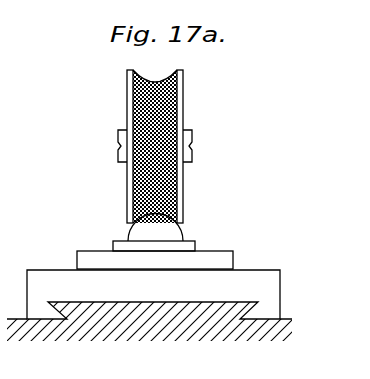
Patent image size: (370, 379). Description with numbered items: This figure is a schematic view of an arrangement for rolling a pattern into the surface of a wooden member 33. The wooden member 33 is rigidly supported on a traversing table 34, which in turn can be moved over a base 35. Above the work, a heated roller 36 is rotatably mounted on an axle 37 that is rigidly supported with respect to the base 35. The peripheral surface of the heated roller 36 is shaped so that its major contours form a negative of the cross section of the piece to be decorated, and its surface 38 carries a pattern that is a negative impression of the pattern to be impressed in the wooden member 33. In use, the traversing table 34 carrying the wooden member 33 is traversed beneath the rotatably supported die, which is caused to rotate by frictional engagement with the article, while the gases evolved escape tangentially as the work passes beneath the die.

The wooden member 33 is at (132, 232).
The traversing table 34 is at (258, 278).
The base 35 is at (233, 311).
The heated roller 36 is at (183, 88).
The axle 37 is at (188, 147).
The surface of the die 38 is at (144, 117).